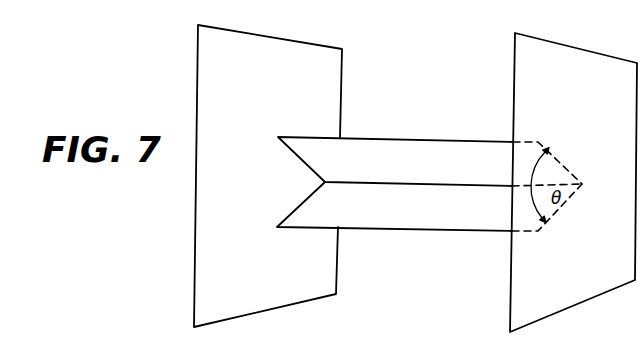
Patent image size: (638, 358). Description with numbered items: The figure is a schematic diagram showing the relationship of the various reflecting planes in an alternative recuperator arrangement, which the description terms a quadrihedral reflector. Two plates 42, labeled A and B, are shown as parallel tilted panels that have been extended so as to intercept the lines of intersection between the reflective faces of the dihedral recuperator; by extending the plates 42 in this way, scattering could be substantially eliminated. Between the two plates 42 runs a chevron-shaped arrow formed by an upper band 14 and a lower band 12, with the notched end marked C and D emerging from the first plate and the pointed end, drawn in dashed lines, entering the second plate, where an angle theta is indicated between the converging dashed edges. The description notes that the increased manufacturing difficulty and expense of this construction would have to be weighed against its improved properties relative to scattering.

The plates 42 is at (290, 37).
The upper arrow band C 14 is at (398, 151).
The lower arrow band D 12 is at (403, 213).